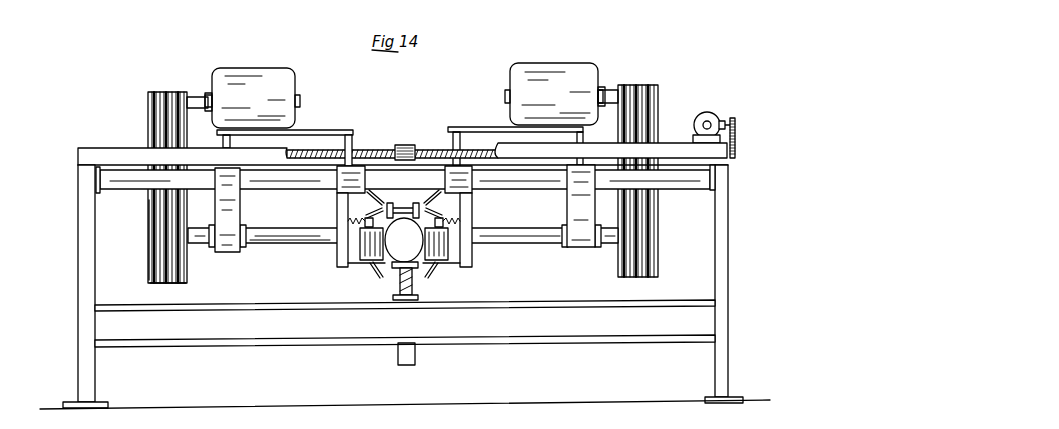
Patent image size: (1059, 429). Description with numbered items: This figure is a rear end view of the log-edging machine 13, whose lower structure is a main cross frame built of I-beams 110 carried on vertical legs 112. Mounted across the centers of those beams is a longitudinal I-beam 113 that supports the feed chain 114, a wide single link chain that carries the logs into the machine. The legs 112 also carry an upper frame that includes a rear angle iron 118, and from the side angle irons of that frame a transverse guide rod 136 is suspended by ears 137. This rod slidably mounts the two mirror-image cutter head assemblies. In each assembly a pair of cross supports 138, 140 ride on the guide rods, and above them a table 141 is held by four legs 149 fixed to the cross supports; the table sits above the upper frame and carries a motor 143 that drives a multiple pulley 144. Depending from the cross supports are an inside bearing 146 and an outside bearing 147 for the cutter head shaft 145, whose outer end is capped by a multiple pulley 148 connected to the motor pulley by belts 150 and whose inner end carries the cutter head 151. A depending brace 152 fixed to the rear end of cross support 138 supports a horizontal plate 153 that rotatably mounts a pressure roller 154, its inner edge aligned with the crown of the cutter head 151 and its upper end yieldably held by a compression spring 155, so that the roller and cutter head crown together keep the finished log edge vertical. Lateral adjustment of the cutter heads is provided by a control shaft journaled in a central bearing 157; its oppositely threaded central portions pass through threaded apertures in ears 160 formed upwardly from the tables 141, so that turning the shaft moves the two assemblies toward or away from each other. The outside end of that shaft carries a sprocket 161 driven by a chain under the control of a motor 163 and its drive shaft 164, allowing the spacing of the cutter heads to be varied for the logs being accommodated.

The machine frame plate 13 is at (97, 183).
The I-beam 110 is at (300, 330).
The vertical leg 112 is at (90, 371).
The I-beam 113 is at (415, 285).
The feed chain 114 is at (397, 270).
The rear angle iron 118 is at (124, 150).
The transverse guide rod 136 is at (107, 192).
The ear 137 is at (712, 178).
The cross support 138 is at (243, 178).
The cross support 140 is at (337, 175).
The table 141 is at (313, 130).
The motor 143 is at (288, 96).
The multiple pulley 144 is at (172, 92).
The cutter head shaft 145 is at (285, 236).
The inside bearing 146 is at (337, 244).
The outside bearing 147 is at (243, 247).
The multiple pulley 148 is at (171, 283).
The leg 149 is at (222, 143).
The belt 150 is at (152, 213).
The cutter head 151 is at (382, 264).
The depending brace 152 is at (466, 209).
The horizontal plate 153 is at (472, 272).
The pressure roller 154 is at (472, 256).
The compression spring 155 is at (467, 221).
The central bearing 157 is at (408, 148).
The ear 160 is at (338, 153).
The sprocket 161 is at (734, 150).
The motor 163 is at (717, 117).
The drive shaft 164 is at (727, 125).